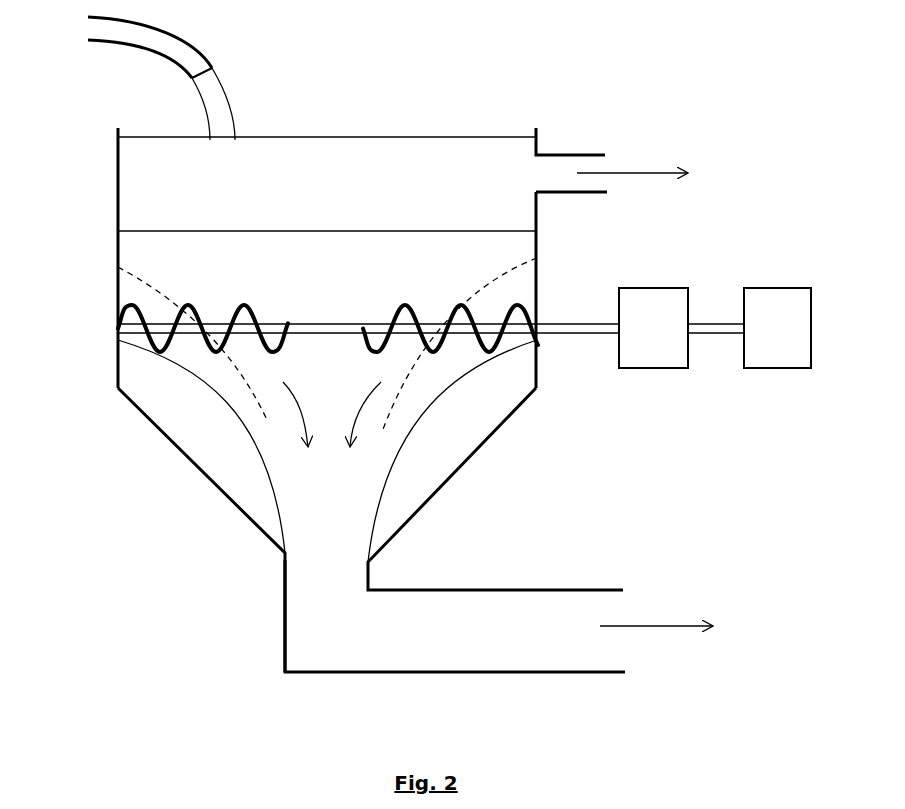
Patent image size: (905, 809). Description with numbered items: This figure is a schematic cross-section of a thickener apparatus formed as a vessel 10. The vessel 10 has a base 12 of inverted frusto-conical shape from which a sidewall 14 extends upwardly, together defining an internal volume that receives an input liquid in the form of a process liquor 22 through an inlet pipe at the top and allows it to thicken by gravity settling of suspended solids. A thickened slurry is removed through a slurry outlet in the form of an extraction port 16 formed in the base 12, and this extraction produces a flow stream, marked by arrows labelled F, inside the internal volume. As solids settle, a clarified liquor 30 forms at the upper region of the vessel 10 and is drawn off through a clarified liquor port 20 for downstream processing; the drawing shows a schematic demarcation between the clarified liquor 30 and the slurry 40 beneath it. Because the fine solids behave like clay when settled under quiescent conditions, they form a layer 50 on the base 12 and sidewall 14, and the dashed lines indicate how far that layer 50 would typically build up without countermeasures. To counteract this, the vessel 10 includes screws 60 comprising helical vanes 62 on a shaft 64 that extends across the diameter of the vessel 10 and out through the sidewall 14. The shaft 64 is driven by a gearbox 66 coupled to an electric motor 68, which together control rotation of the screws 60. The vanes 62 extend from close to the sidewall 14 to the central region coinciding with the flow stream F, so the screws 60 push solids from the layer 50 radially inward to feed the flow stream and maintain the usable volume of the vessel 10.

The vessel 10 is at (110, 199).
The base 12 is at (447, 489).
The sidewall 14 is at (542, 247).
The extraction port 16 is at (280, 578).
The clarified liquor port 20 is at (575, 148).
The process liquor 22 is at (217, 102).
The clarified liquor 30 is at (434, 174).
The slurry 40 is at (322, 262).
The layer 50 is at (193, 421).
The screws 60 is at (147, 309).
The helical vanes 62 is at (422, 314).
The shaft 64 is at (349, 318).
The gearbox 66 is at (666, 284).
The electric motor 68 is at (787, 284).